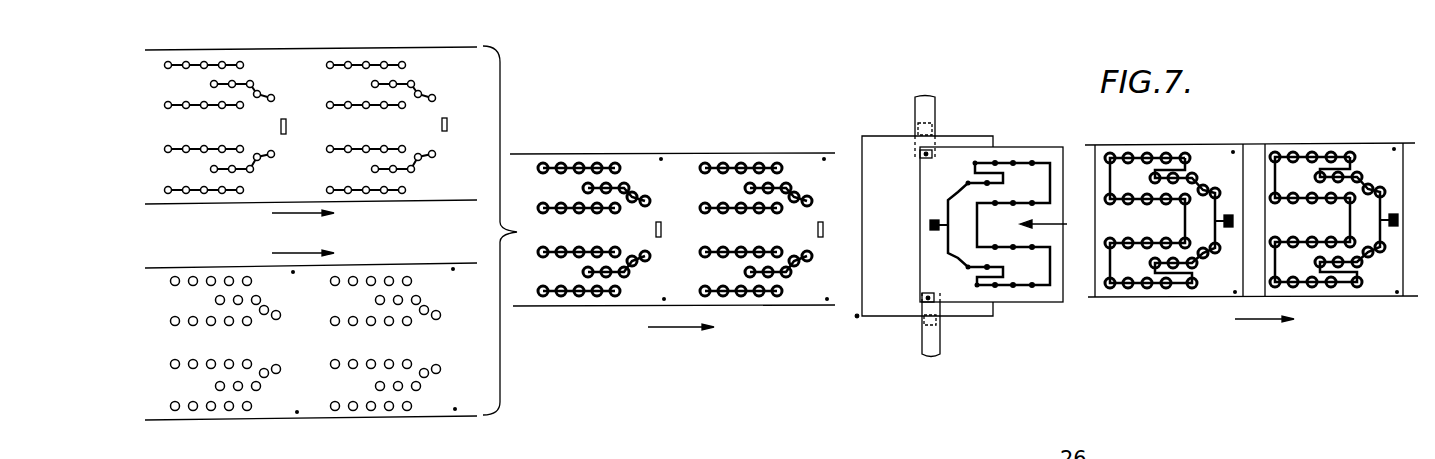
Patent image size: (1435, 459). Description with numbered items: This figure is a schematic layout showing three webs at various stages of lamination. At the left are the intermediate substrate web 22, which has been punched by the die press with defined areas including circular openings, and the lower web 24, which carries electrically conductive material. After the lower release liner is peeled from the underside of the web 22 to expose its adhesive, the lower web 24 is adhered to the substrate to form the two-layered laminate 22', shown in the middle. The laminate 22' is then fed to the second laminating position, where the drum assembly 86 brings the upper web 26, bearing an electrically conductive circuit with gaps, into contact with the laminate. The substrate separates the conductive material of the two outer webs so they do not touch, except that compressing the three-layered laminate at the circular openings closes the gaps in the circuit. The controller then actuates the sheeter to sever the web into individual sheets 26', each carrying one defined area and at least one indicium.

The web 22 is at (311, 151).
The lower web 24 is at (381, 259).
The two-layered laminate 22' is at (672, 215).
The drum assembly 86 is at (879, 332).
The upper web 26 is at (993, 193).
The sheets 26' is at (1251, 258).